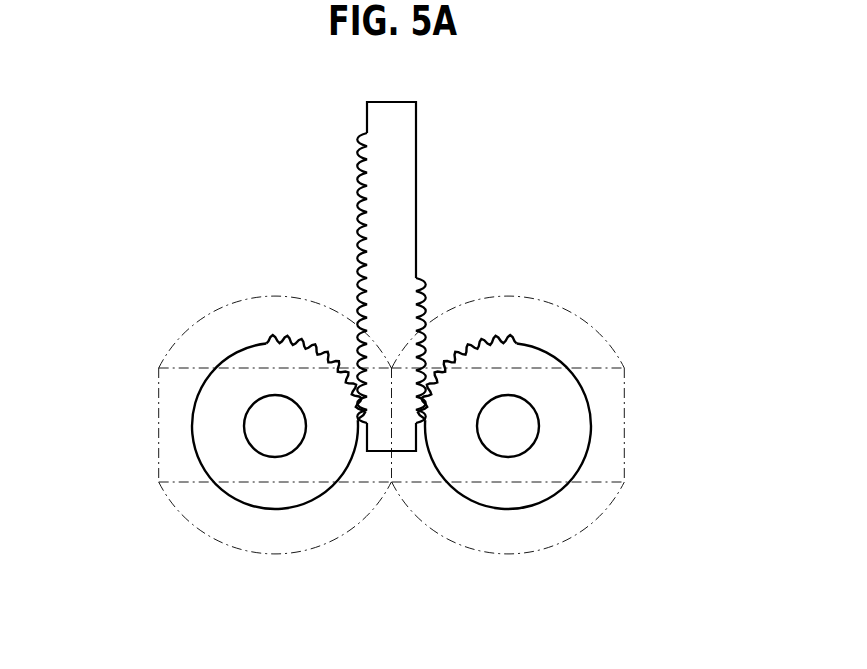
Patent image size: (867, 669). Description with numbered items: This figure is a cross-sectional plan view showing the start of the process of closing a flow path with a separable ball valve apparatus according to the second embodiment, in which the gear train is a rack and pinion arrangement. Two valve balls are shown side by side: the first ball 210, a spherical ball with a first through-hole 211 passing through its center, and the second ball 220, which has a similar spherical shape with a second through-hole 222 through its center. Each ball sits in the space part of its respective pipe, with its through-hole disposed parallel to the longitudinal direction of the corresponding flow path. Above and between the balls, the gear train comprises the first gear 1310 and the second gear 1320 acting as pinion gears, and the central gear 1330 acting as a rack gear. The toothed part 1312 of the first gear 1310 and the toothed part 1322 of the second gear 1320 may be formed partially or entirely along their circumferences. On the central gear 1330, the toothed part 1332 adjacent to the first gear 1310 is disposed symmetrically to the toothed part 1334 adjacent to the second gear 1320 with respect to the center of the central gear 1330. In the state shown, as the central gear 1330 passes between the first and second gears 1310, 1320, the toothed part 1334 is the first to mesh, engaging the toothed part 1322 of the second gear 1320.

The first ball 210 is at (190, 527).
The first through-hole 211 is at (177, 420).
The second ball 220 is at (590, 527).
The second through-hole 222 is at (607, 405).
The first gear 1310 is at (252, 367).
The toothed part of the first gear 1312 is at (312, 342).
The second gear 1320 is at (566, 383).
The toothed part of the second gear 1322 is at (470, 352).
The central gear 1330 is at (384, 276).
The toothed part of the central gear adjacent to the first gear 1332 is at (362, 157).
The toothed part of the central gear adjacent to the second gear 1334 is at (422, 288).